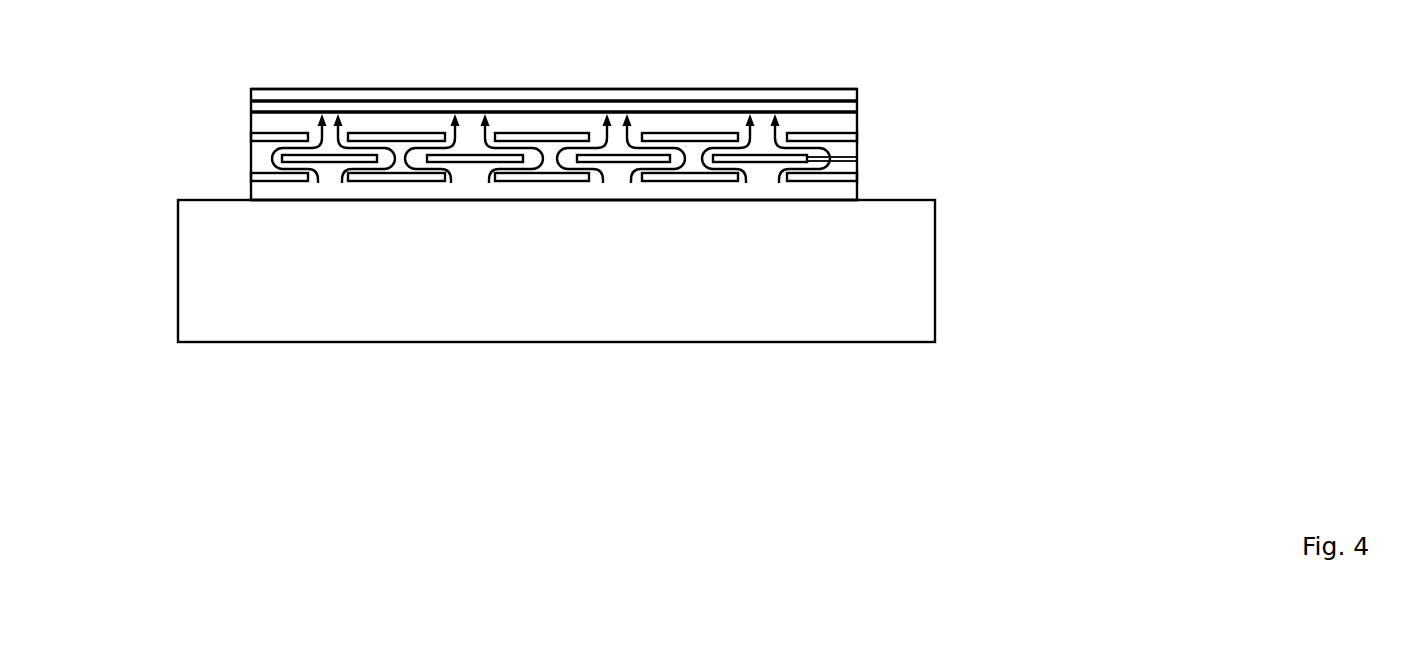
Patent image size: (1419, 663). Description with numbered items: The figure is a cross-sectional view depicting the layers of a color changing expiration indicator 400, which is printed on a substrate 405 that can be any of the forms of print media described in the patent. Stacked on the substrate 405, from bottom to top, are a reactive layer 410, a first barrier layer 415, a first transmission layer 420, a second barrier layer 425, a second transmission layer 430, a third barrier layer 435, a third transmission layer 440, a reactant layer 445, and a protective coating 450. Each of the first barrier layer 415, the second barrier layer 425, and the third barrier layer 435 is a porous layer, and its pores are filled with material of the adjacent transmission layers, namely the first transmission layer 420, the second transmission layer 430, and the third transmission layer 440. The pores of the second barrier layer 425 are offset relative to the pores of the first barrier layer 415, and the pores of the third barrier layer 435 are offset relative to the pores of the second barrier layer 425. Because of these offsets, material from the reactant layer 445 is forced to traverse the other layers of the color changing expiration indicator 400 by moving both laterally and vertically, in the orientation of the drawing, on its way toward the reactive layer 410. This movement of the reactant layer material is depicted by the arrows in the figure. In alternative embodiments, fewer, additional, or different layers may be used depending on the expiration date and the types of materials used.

The color changing expiration indicator 400 is at (236, 148).
The substrate 405 is at (280, 342).
The reactive layer 410 is at (863, 195).
The first barrier layer 415 is at (863, 180).
The first transmission layer 420 is at (863, 170).
The second barrier layer 425 is at (863, 159).
The second transmission layer 430 is at (863, 146).
The third barrier layer 435 is at (863, 133).
The third transmission layer 440 is at (863, 118).
The reactant layer 445 is at (863, 104).
The protective coating 450 is at (863, 91).